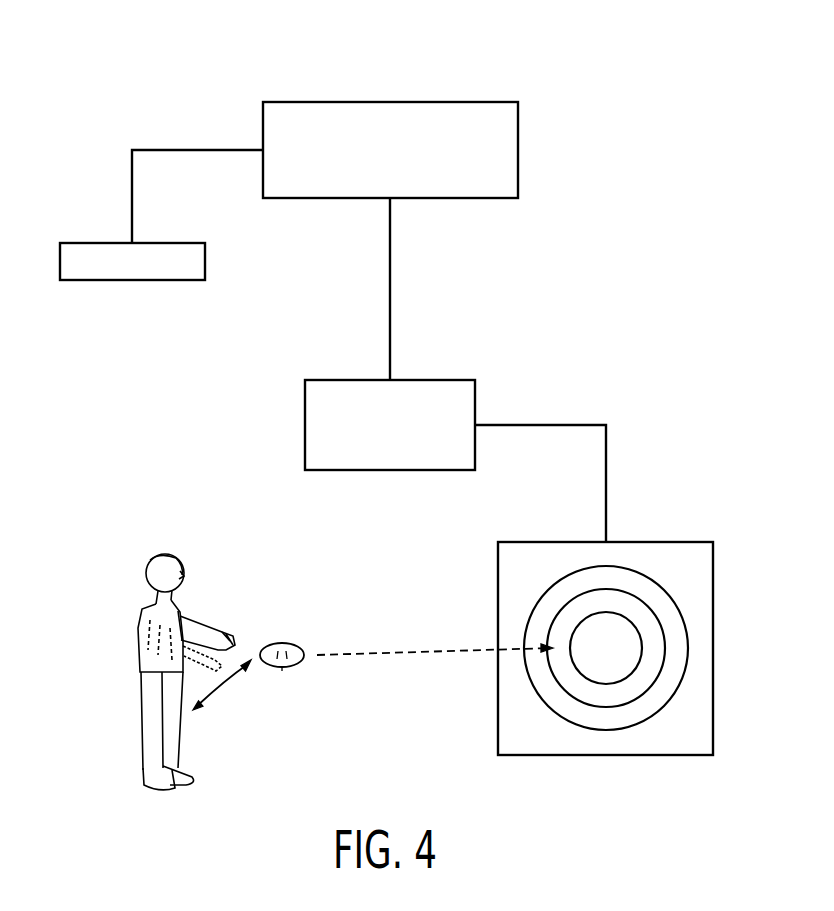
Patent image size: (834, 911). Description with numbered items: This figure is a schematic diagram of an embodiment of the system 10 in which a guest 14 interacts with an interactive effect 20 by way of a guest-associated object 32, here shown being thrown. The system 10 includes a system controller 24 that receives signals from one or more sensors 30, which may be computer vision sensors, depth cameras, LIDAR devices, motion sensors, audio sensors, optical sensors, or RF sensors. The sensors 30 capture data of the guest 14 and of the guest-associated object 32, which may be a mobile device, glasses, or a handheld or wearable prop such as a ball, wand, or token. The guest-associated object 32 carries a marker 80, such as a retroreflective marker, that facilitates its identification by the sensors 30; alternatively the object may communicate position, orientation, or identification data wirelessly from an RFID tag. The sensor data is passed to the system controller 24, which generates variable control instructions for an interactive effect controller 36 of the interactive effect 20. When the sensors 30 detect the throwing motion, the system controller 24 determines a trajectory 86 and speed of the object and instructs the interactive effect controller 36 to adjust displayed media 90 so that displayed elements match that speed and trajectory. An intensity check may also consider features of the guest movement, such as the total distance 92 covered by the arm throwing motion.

The system 10 is at (167, 51).
The guest 14 is at (142, 662).
The interactive effect 20 is at (658, 542).
The system controller 24 is at (518, 148).
The sensors 30 is at (167, 243).
The guest-associated object 32 is at (270, 645).
The interactive effect controller 36 is at (433, 380).
The marker 80 is at (285, 673).
The trajectory 86 is at (400, 652).
The displayed media 90 is at (665, 590).
The total distance 92 is at (228, 683).